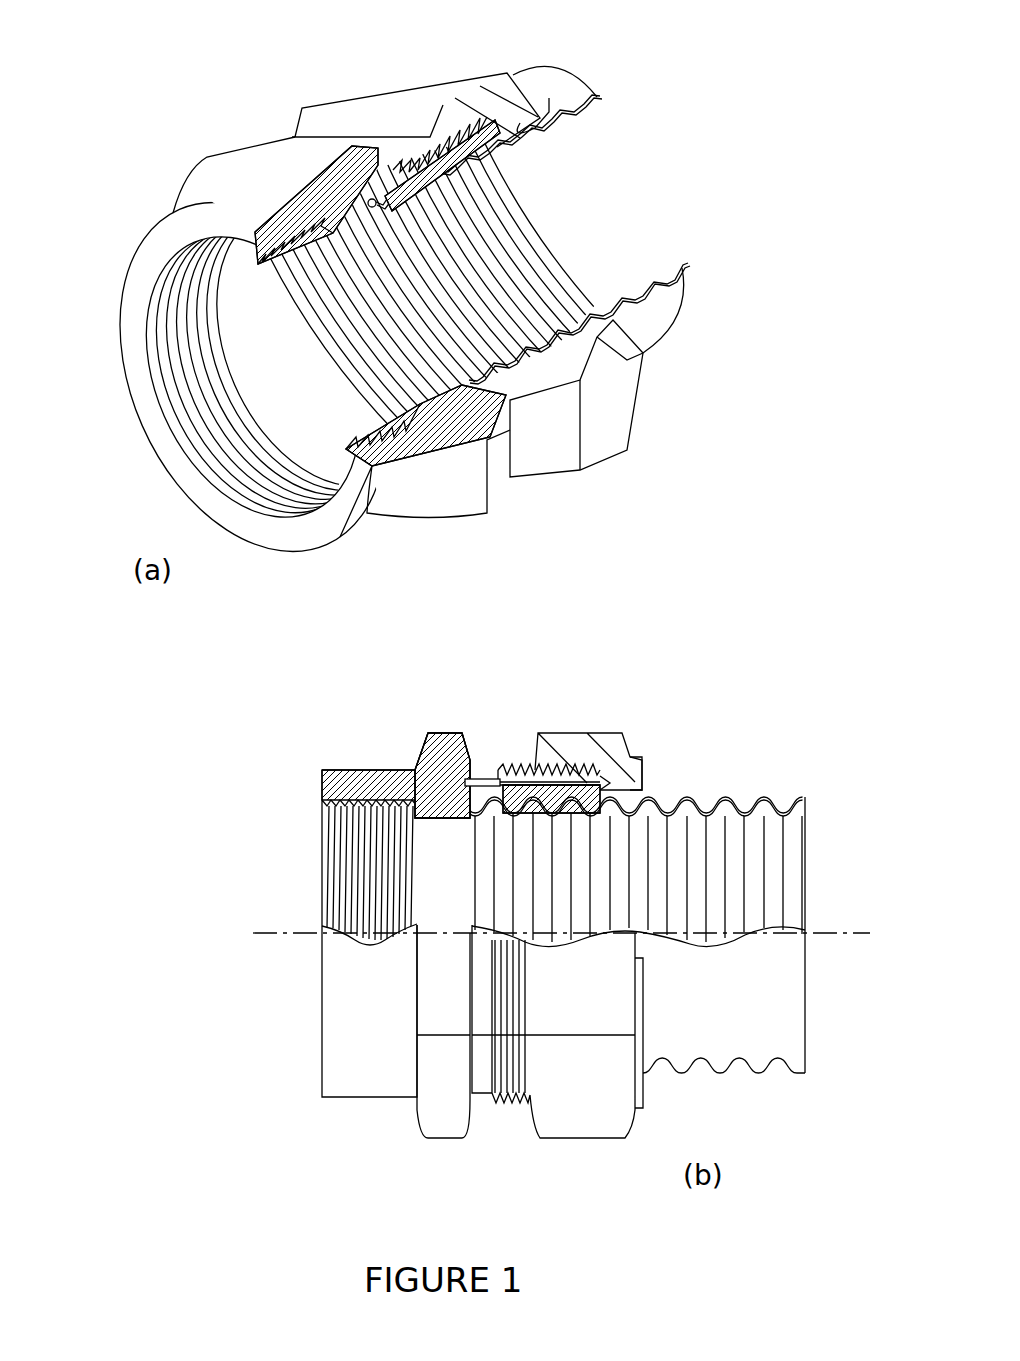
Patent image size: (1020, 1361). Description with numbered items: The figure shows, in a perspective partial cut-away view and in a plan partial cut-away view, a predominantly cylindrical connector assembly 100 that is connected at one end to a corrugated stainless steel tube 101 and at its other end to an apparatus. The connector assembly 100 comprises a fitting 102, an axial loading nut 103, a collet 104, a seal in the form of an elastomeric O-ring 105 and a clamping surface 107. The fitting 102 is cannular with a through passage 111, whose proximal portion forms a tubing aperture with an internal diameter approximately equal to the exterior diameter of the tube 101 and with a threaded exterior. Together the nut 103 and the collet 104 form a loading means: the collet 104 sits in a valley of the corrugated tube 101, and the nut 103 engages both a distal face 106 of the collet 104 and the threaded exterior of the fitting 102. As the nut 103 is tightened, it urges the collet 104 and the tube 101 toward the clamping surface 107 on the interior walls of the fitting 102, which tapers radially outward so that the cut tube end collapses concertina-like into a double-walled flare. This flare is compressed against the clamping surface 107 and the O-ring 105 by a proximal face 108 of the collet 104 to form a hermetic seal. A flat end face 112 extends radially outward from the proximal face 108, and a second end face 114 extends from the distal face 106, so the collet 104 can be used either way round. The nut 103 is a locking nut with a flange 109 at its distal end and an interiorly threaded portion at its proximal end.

The connector assembly 100 is at (128, 86).
The corrugated stainless steel tube 101 is at (530, 80).
The fitting 102 is at (230, 200).
The axial loading nut 103 is at (365, 95).
The collet 104 is at (607, 348).
The O-ring 105 is at (476, 442).
The distal face 106 is at (492, 162).
The clamping surface 107 is at (432, 222).
The proximal face 108 is at (378, 196).
The flange 109 is at (520, 128).
The through passage 111 is at (263, 383).
The flat end face 112 is at (493, 772).
The second end face 114 is at (612, 783).